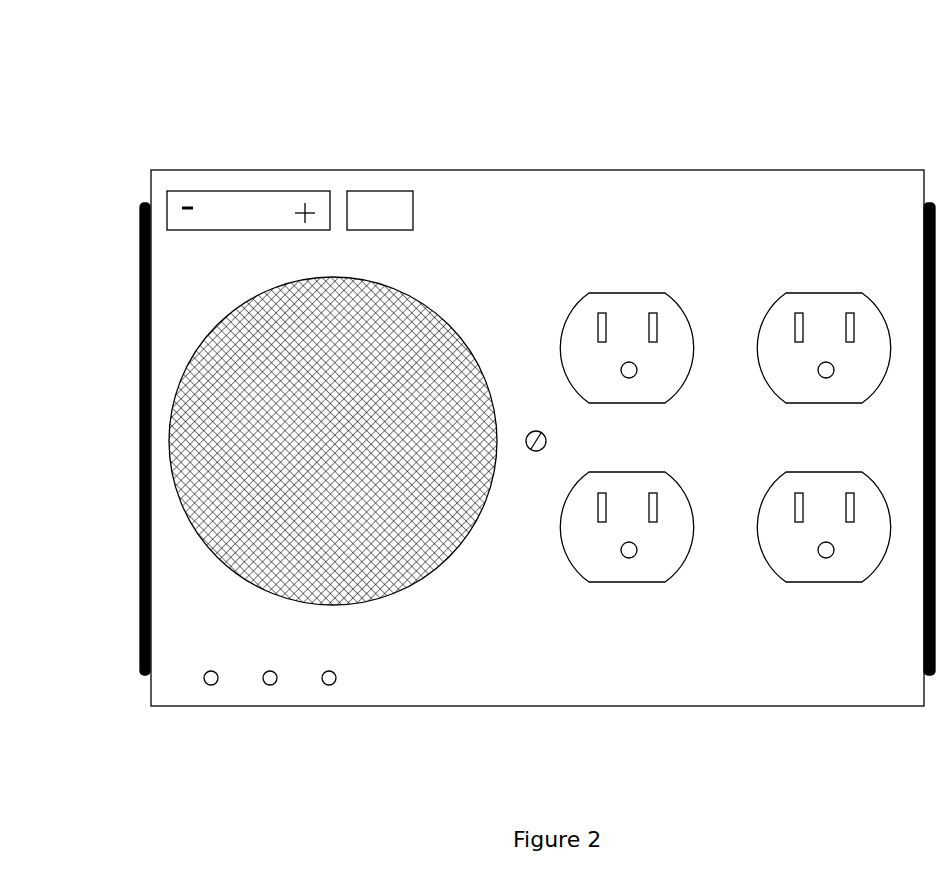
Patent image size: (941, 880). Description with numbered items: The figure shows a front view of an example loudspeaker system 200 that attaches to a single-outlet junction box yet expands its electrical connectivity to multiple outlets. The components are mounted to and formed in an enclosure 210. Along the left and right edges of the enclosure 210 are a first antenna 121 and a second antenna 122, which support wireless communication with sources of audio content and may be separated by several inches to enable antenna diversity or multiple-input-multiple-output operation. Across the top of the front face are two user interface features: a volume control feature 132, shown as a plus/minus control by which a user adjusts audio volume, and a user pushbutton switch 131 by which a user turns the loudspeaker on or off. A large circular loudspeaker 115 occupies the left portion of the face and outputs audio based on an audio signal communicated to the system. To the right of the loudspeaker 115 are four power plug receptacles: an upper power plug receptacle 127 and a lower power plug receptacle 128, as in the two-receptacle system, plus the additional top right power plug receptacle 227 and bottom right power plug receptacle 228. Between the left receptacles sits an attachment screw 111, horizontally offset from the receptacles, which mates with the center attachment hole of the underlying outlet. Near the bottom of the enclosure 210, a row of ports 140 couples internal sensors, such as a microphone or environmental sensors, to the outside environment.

The loudspeaker system 200 is at (78, 82).
The enclosure 210 is at (548, 168).
The first antenna 121 is at (141, 220).
The second antenna 122 is at (922, 227).
The volume control feature 132 is at (247, 192).
The user pushbutton switch 131 is at (380, 190).
The loudspeaker 115 is at (262, 296).
The upper power plug receptacle 127 is at (560, 347).
The top right power plug receptacle 227 is at (758, 313).
The lower power plug receptacle 128 is at (565, 555).
The bottom right power plug receptacle 228 is at (762, 495).
The attachment screw 111 is at (548, 438).
The ports 140 is at (211, 686).